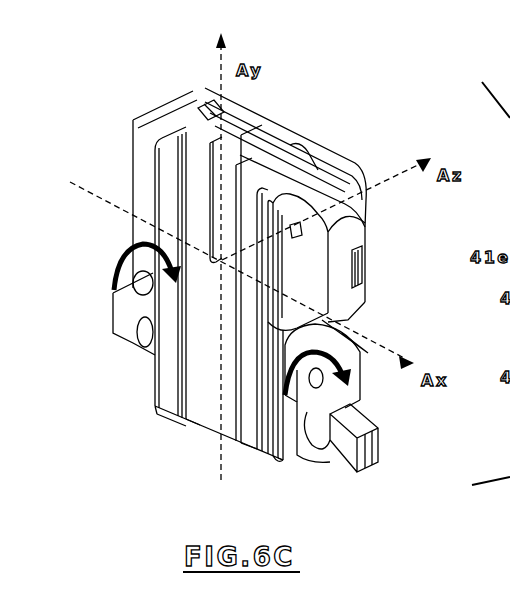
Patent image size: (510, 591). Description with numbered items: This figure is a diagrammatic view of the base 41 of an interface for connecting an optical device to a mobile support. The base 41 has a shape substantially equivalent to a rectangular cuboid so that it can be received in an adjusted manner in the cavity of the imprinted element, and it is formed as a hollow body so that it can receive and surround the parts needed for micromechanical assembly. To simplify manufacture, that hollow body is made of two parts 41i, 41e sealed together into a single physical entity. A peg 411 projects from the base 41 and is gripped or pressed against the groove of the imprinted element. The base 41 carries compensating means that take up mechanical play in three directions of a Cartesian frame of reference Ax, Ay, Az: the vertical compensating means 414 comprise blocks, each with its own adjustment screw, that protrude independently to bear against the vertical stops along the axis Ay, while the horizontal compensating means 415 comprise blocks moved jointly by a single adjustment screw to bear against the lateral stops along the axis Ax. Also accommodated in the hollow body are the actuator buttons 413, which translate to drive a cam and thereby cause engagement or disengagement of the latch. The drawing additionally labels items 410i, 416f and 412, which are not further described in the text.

The base 41 is at (350, 143).
The peg 411 is at (253, 142).
The vertical compensating means 414 is at (200, 112).
The part of the hollow body 41i is at (352, 232).
The inner face of holder 410i is at (312, 263).
The horizontal compensating means 415 is at (353, 272).
The pivot direction arrow 416f is at (136, 255).
The actuator buttons 413 is at (133, 337).
The part of the hollow body 41e is at (203, 412).
The lower rib 412 is at (245, 408).